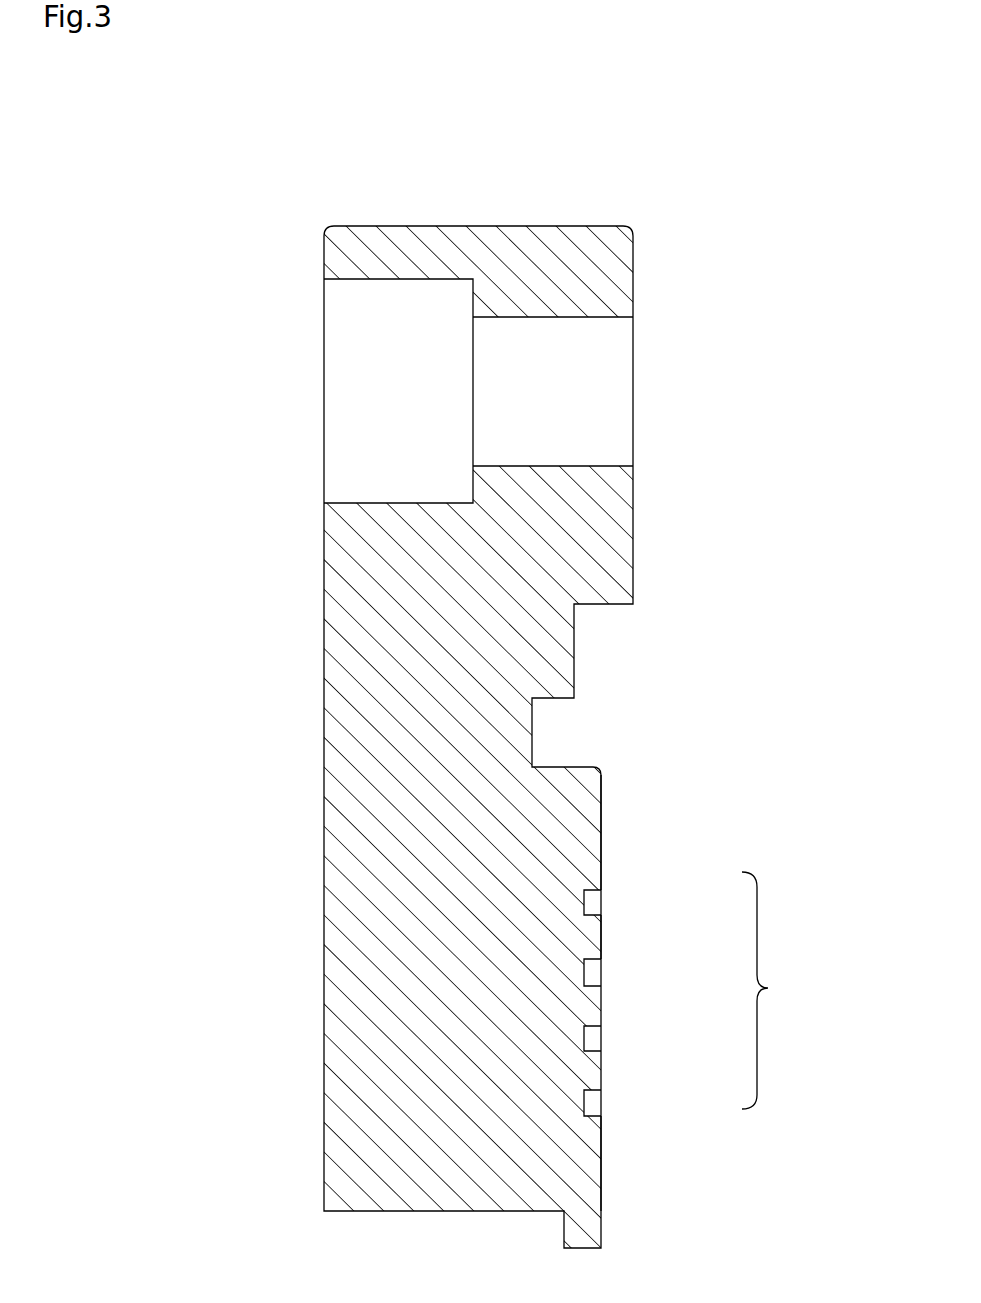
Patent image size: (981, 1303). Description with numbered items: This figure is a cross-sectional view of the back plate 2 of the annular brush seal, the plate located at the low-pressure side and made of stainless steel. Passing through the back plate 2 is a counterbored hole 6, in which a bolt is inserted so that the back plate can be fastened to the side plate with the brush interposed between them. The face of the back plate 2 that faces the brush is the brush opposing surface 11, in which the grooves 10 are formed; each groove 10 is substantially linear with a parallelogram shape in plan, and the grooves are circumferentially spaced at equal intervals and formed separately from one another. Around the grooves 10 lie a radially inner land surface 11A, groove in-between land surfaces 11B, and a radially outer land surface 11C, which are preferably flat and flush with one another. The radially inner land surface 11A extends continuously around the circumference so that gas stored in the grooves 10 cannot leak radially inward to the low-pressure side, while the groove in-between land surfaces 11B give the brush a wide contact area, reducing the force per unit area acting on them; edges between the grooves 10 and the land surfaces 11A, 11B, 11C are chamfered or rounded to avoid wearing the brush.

The back plate 2 is at (657, 200).
The counterbored hole 6 is at (602, 465).
The grooves 10 is at (592, 902).
The brush opposing surface 11 is at (798, 1003).
The radially inner land surface 11A is at (601, 1167).
The groove in-between land surfaces 11B is at (601, 937).
The radially outer land surface 11C is at (601, 841).